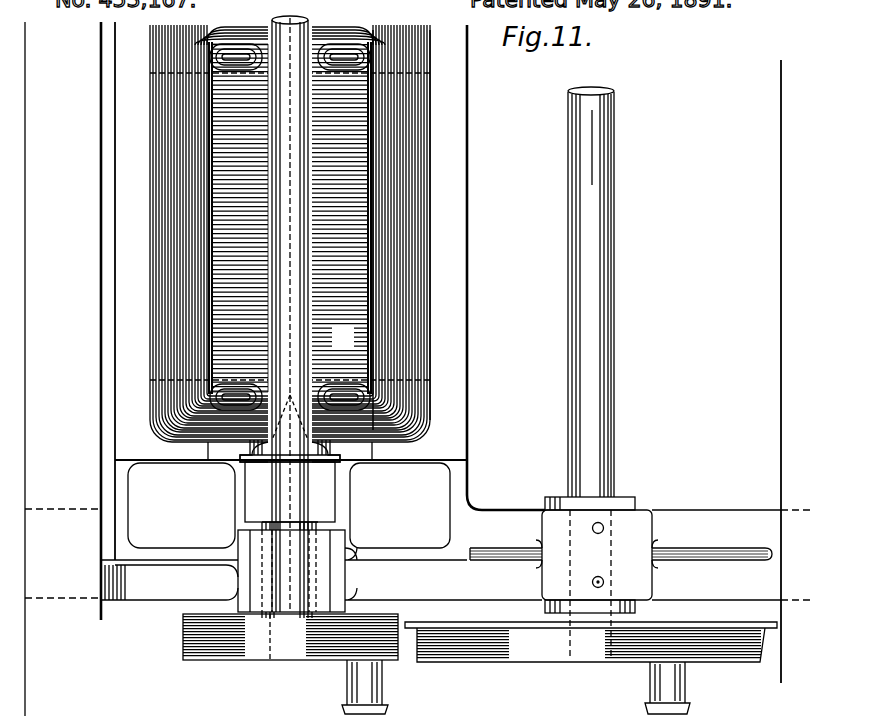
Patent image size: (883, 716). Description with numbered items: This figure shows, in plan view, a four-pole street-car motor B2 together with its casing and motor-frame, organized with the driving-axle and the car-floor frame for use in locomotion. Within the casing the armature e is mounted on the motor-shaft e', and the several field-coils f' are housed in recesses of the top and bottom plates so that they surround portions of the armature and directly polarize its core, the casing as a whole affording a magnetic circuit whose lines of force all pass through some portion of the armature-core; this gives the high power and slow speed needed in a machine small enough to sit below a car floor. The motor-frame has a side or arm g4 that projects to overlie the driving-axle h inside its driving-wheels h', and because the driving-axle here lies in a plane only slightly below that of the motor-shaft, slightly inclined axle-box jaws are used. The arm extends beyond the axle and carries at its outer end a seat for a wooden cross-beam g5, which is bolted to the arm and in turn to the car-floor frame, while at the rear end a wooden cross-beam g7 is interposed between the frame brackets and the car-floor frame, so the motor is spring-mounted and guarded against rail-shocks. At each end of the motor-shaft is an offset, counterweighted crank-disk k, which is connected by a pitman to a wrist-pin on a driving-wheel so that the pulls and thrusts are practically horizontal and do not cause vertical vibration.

The motor B2 is at (252, 708).
The armature e is at (283, 218).
The motor-shaft e' is at (290, 314).
The field-coils f' is at (408, 230).
The wooden cross-beam g7 is at (70, 369).
The wooden cross-beam g5 is at (796, 371).
The frame side or arm g4 is at (625, 555).
The driving-axle h is at (597, 373).
The driving-wheels h' is at (591, 668).
The crank-disk k is at (290, 664).